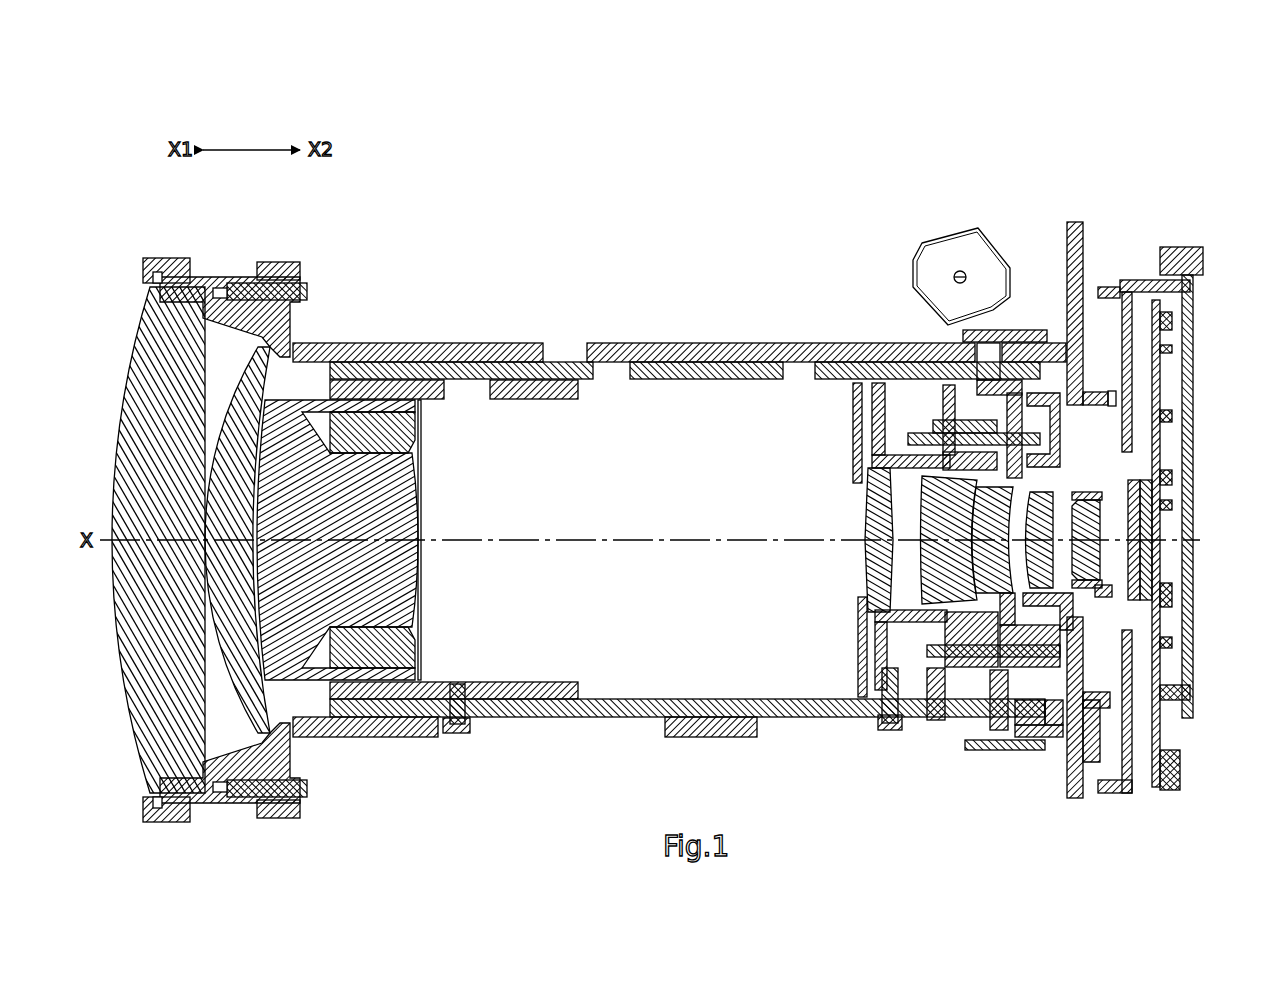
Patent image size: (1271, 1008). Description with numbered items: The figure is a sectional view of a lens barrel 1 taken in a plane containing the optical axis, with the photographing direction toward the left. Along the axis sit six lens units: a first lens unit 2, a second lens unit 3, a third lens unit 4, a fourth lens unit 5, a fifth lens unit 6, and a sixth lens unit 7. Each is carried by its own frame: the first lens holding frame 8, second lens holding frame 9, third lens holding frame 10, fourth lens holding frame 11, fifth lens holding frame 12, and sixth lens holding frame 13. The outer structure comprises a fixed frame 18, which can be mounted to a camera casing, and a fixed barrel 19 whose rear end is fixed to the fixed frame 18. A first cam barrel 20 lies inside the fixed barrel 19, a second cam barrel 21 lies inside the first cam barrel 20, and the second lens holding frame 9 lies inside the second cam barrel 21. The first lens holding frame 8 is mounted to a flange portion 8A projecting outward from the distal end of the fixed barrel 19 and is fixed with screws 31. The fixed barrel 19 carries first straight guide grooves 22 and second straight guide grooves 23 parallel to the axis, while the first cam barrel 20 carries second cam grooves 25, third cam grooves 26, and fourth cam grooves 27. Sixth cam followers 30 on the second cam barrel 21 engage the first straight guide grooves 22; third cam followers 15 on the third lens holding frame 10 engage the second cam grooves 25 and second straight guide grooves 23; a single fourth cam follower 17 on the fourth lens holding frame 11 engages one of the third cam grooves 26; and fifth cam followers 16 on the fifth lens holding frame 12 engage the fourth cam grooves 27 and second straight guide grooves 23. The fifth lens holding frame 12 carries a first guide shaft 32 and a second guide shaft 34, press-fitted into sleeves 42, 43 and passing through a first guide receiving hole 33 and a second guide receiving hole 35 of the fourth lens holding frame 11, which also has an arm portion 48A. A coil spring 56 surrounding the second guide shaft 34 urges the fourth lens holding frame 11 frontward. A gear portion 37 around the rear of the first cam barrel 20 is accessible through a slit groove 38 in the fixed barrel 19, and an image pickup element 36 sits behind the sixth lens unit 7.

The lens barrel 1 is at (673, 214).
The first lens unit 2 is at (138, 345).
The second lens unit 3 is at (421, 520).
The third lens unit 4 is at (866, 520).
The fourth lens unit 5 is at (976, 518).
The fifth lens unit 6 is at (1050, 500).
The sixth lens unit 7 is at (1095, 500).
The first lens holding frame 8 is at (205, 277).
The flange portion 8A is at (300, 268).
The second lens holding frame 9 is at (312, 400).
The third lens holding frame 10 is at (858, 400).
The fourth lens holding frame 11 is at (945, 632).
The fifth lens holding frame 12 is at (1065, 620).
The sixth lens holding frame 13 is at (1100, 597).
The third cam followers 15 is at (885, 725).
The fifth cam followers 16 is at (1000, 735).
The fourth cam follower 17 is at (940, 715).
The fixed frame 18 is at (1075, 222).
The fixed barrel 19 is at (432, 343).
The first cam barrel 20 is at (372, 362).
The second cam barrel 21 is at (525, 399).
The first straight guide grooves 22 is at (615, 717).
The second straight guide grooves 23 is at (772, 737).
The second cam grooves 25 is at (865, 715).
The third cam grooves 26 is at (925, 712).
The fourth cam grooves 27 is at (1030, 737).
The sixth cam followers 30 is at (455, 735).
The screws 31 is at (308, 292).
The first guide shaft 32 is at (1015, 712).
The first guide receiving hole 33 is at (968, 742).
The second guide shaft 34 is at (915, 433).
The second guide receiving hole 35 is at (945, 428).
The image pickup element 36 is at (1150, 520).
The gear portion 37 is at (1020, 335).
The slit groove 38 is at (988, 343).
The sleeve 42 is at (1085, 762).
The sleeve 43 is at (1108, 400).
The arm portion 48A is at (965, 700).
The coil spring 56 is at (985, 412).